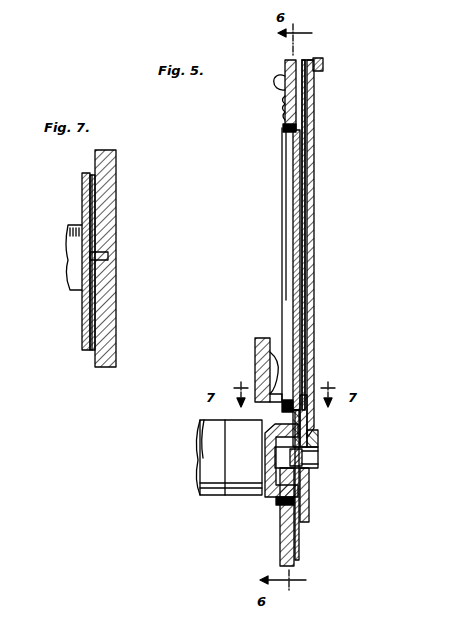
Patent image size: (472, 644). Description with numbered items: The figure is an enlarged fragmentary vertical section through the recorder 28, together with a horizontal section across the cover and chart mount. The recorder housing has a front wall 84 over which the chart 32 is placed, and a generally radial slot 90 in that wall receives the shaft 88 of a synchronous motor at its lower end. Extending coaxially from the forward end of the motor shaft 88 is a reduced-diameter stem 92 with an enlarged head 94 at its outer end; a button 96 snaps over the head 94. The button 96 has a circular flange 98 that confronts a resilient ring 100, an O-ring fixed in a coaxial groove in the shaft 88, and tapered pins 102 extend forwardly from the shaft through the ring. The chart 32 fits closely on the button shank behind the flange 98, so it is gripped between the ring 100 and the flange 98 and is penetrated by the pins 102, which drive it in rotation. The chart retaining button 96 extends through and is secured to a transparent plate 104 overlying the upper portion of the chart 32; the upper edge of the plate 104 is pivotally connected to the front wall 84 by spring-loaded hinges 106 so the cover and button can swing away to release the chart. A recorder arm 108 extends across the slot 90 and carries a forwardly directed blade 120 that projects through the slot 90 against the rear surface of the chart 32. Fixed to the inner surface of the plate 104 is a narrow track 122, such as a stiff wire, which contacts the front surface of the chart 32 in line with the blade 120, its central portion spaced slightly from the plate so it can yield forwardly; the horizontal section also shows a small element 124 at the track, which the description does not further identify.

In FIG. 5, the recorder 28 is at (346, 116).
In FIG. 5, the chart 32 is at (300, 546).
In FIG. 7, the chart 32 is at (85, 340).
In FIG. 5, the front wall 84 is at (283, 96).
In FIG. 5, the shaft 88 is at (210, 466).
In FIG. 5, the slot 90 is at (284, 134).
In FIG. 5, the stem 92 is at (266, 460).
In FIG. 5, the head 94 is at (320, 460).
In FIG. 5, the button 96 is at (318, 438).
In FIG. 5, the circular flange 98 is at (310, 396).
In FIG. 5, the resilient ring 100 is at (290, 503).
In FIG. 5, the tapered pins 102 is at (308, 416).
In FIG. 5, the transparent plate 104 is at (309, 503).
In FIG. 7, the transparent plate 104 is at (108, 190).
In FIG. 5, the hinges 106 is at (323, 68).
In FIG. 5, the recorder arm 108 is at (255, 352).
In FIG. 5, the blade 120 is at (311, 368).
In FIG. 7, the blade 120 is at (72, 291).
In FIG. 5, the track 122 is at (300, 190).
In FIG. 7, the track 122 is at (97, 250).
In FIG. 7, the pin 124 is at (108, 257).